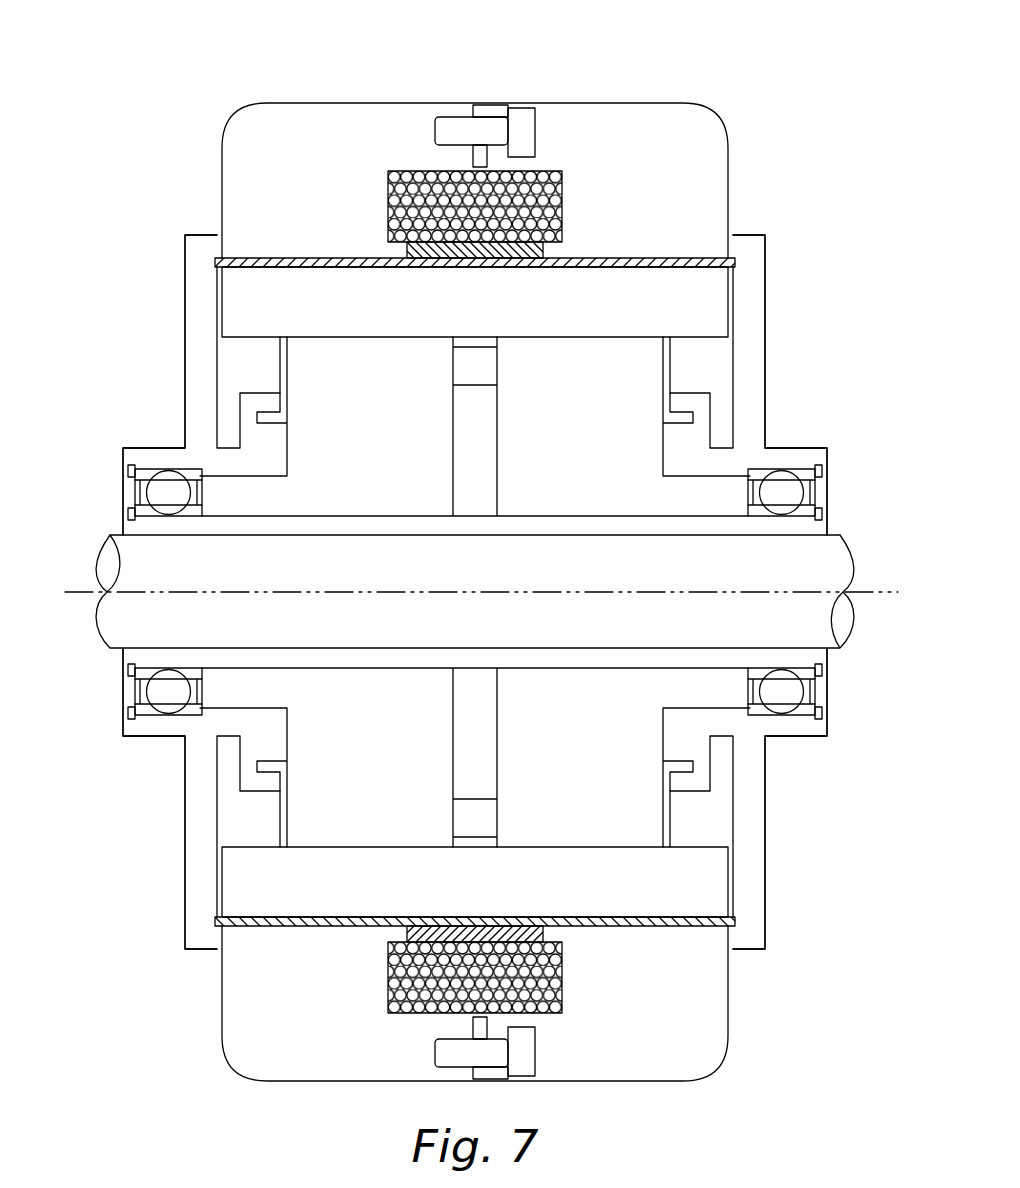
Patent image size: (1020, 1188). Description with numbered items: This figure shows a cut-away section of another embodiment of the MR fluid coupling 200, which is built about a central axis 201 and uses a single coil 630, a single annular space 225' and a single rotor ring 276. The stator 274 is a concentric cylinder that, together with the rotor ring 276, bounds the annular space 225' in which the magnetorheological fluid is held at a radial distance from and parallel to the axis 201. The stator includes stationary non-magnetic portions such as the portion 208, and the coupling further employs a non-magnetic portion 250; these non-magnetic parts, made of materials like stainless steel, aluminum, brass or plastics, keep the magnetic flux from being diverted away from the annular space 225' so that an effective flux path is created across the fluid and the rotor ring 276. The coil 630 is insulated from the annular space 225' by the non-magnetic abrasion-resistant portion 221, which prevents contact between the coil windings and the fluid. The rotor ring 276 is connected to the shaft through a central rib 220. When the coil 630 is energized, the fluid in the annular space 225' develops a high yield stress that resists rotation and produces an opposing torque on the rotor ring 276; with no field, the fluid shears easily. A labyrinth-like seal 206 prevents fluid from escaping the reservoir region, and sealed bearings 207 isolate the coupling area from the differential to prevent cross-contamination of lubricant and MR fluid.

The MR fluid coupling 200 is at (180, 86).
The axis 201 is at (875, 588).
The labyrinth-like seal 206 is at (690, 418).
The sealed bearings 207 is at (792, 495).
The stationary non-magnetic portion 208 is at (185, 338).
The non-magnetic portion 250 is at (185, 338).
The central rib 220 is at (498, 418).
The stationary non-magnetic portion 221 is at (547, 255).
The single annular space 225' is at (437, 542).
The stator 274 is at (222, 993).
The rotor ring 276 is at (733, 883).
The single coil 630 is at (547, 983).